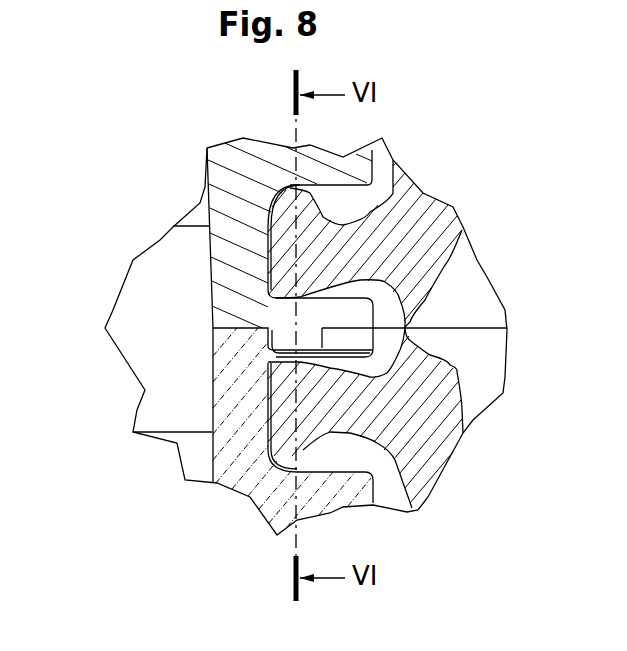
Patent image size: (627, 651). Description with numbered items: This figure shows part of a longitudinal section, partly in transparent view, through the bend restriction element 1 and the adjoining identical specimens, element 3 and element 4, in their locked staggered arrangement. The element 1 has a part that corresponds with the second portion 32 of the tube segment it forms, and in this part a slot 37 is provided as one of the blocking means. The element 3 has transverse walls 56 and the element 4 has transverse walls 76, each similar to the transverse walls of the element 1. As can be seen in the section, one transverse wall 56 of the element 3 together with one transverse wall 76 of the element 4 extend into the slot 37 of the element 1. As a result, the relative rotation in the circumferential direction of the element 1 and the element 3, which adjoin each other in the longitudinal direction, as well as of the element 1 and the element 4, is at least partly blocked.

The bend restriction element 1 is at (353, 339).
The element 3 is at (190, 169).
The element 4 is at (195, 452).
The second portion 32 is at (412, 325).
The slot 37 is at (400, 310).
The transverse walls 56 is at (336, 312).
The transverse walls 76 is at (336, 349).